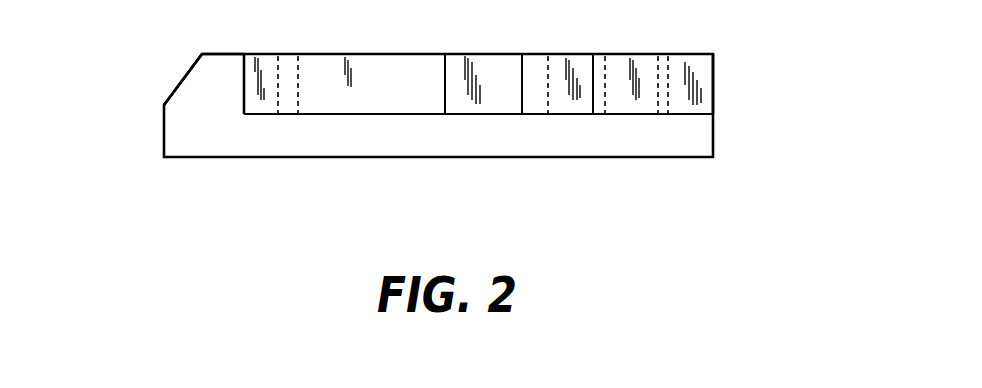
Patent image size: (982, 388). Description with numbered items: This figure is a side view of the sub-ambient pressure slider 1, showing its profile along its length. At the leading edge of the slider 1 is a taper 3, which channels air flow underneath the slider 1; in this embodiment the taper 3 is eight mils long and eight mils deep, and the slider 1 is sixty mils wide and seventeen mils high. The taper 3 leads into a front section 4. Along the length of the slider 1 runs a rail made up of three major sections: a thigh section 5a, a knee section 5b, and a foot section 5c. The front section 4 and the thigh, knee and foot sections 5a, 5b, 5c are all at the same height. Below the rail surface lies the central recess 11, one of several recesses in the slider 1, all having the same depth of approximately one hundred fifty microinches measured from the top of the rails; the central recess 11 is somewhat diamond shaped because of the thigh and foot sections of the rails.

The slider 1 is at (149, 133).
The taper 3 is at (183, 72).
The front section 4 is at (217, 53).
The thigh section 5a is at (315, 53).
The knee section 5b is at (487, 53).
The foot section 5c is at (587, 53).
The central recess 11 is at (341, 113).